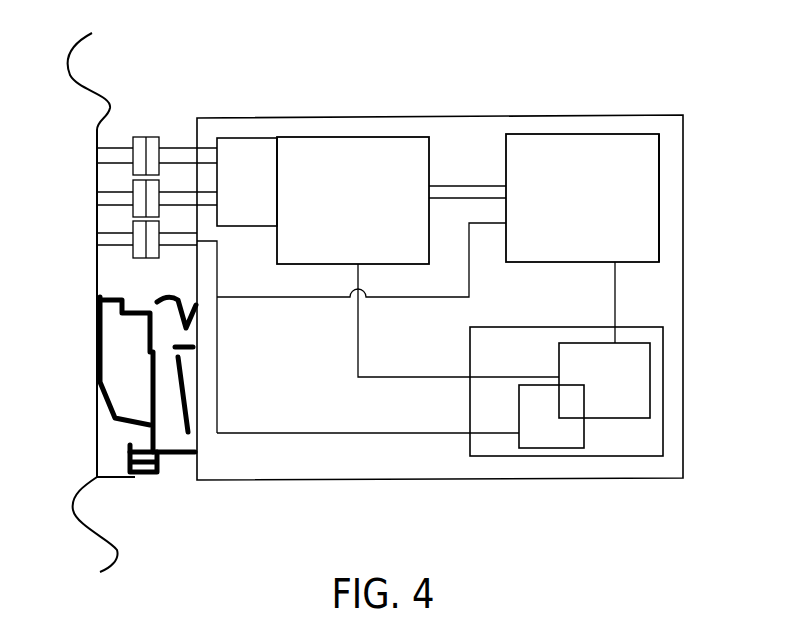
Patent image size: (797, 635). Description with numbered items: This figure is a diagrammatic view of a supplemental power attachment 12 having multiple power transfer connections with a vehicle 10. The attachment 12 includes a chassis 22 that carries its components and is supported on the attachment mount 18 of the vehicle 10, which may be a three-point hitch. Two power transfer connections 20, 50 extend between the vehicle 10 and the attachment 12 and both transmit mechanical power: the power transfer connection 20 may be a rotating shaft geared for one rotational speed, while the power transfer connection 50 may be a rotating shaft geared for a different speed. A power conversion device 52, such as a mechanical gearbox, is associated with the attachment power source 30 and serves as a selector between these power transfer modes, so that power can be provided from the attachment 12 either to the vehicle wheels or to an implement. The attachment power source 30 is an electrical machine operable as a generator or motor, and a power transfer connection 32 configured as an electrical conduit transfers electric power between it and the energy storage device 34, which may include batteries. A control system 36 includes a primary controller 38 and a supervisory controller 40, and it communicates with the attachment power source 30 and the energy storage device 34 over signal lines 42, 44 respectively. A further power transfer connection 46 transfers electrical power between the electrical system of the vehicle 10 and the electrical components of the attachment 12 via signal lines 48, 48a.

The vehicle 10 is at (25, 168).
The supplemental power attachment 12 is at (342, 82).
The attachment mount 18 is at (135, 477).
The power transfer connection 20 is at (147, 135).
The chassis 22 is at (372, 117).
The attachment power source 30 is at (406, 136).
The power transfer connection 32 is at (470, 185).
The energy storage device 34 is at (660, 202).
The control system 36 is at (632, 455).
The primary controller 38 is at (650, 363).
The supervisory controller 40 is at (535, 448).
The signal line 42 is at (412, 377).
The signal line 44 is at (615, 305).
The power transfer connection 46 is at (147, 260).
The signal line 48 is at (317, 298).
The signal line 48a is at (282, 433).
The power transfer connection 50 is at (128, 209).
The power conversion device 52 is at (245, 137).